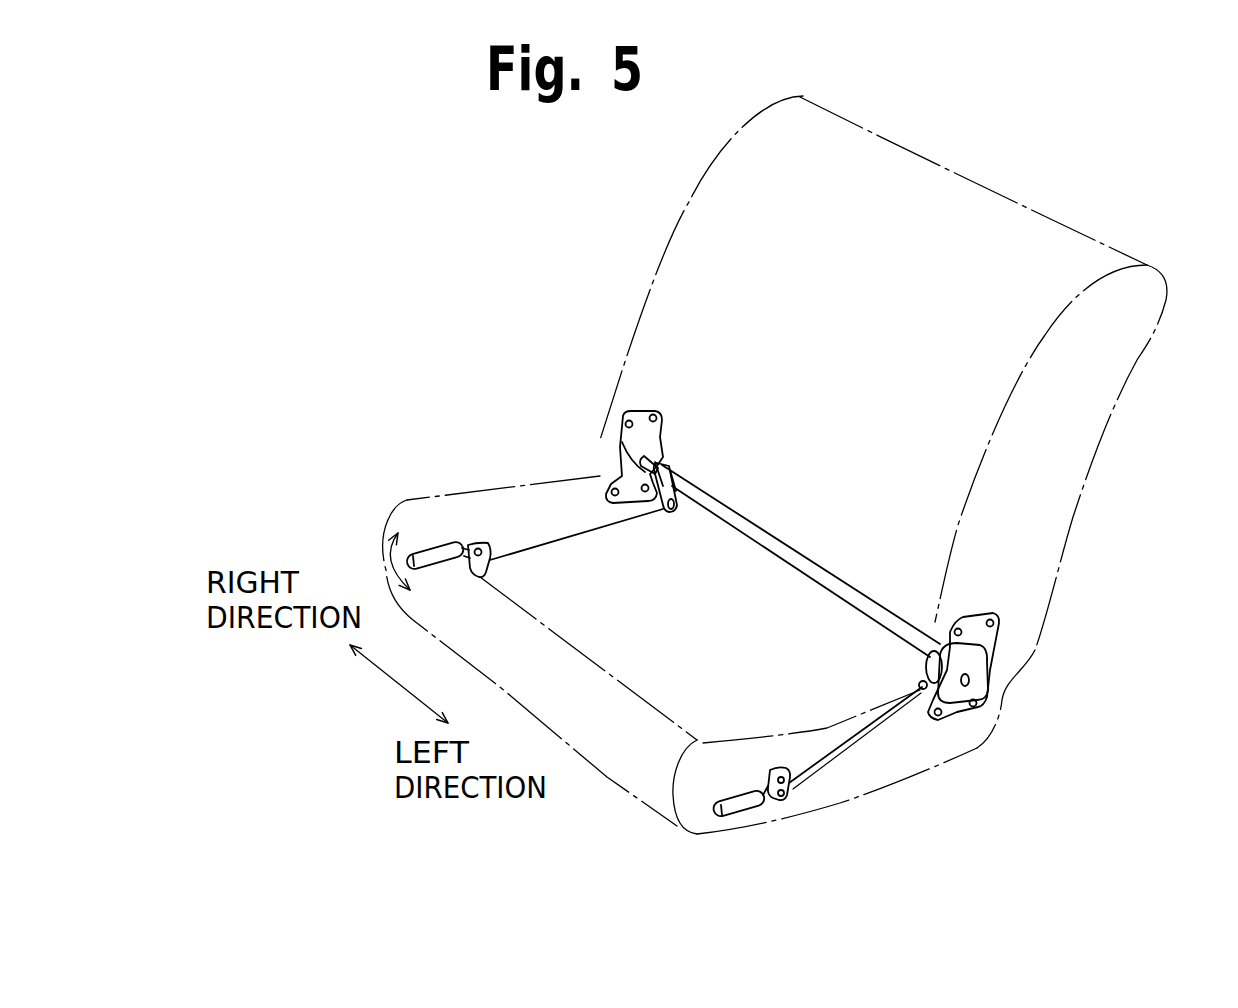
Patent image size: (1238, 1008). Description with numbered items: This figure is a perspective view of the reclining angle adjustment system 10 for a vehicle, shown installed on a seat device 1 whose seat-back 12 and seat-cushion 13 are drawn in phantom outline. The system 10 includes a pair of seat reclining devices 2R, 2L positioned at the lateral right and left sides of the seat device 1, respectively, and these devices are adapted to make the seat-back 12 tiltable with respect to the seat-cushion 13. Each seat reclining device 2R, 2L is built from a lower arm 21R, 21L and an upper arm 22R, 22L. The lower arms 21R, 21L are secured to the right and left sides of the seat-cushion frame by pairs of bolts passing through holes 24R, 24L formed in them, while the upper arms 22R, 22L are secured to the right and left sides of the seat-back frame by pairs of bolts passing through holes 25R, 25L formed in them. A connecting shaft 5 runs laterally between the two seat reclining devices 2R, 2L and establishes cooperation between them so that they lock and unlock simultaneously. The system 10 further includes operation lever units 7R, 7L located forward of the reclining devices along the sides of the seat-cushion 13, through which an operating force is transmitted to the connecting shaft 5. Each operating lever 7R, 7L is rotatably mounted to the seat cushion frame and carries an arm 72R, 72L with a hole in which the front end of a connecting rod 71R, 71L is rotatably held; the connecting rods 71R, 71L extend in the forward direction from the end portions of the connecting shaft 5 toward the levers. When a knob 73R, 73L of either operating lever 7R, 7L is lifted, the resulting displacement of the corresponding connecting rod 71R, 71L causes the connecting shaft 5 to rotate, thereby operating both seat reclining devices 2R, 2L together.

The seat device 1 is at (623, 303).
The seat-back 12 is at (683, 237).
The seat-cushion 13 is at (620, 757).
The reclining angle adjustment system 10 is at (778, 507).
The connecting shaft 5 is at (813, 570).
The seat reclining device 2R is at (602, 467).
The seat reclining device 2L is at (960, 723).
The lower arm 21R is at (613, 478).
The lower arm 21L is at (977, 693).
The upper arm 22R is at (627, 442).
The upper arm 22L is at (987, 638).
The holes 24R is at (610, 490).
The holes 24L is at (982, 707).
The holes 25R is at (628, 423).
The holes 25L is at (1000, 622).
The operating lever 7R is at (447, 540).
The operating lever 7L is at (765, 810).
The connecting rod 71R is at (615, 527).
The connecting rod 71L is at (848, 742).
The arm 72R is at (487, 560).
The arm 72L is at (790, 793).
The knob 73R is at (455, 550).
The knob 73L is at (733, 812).